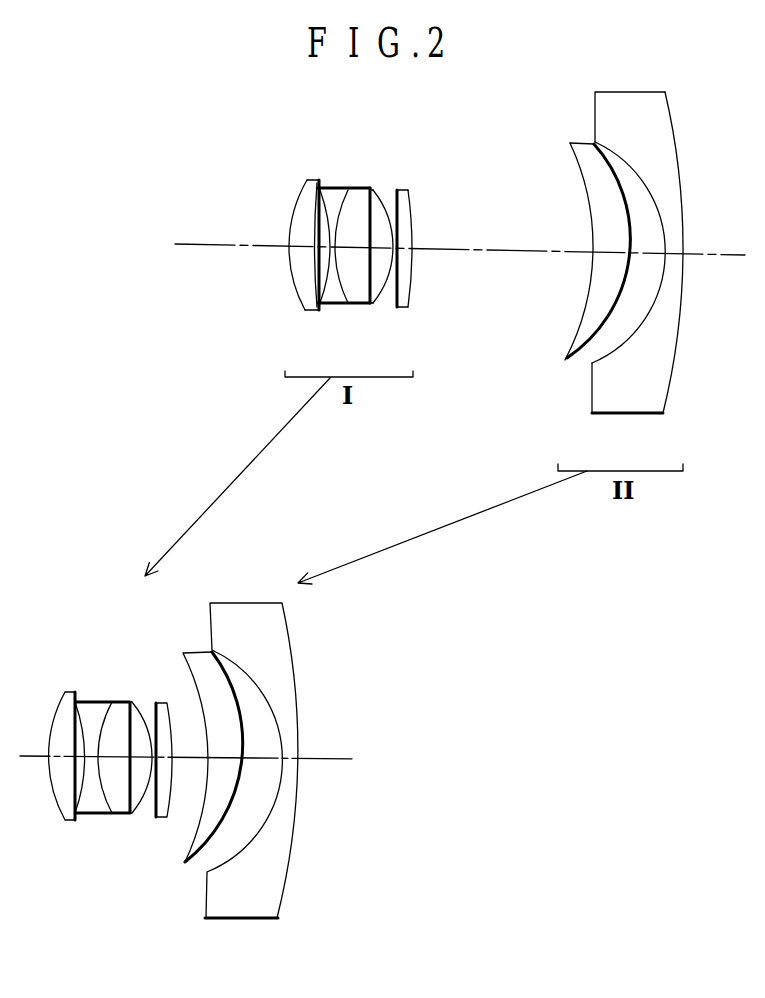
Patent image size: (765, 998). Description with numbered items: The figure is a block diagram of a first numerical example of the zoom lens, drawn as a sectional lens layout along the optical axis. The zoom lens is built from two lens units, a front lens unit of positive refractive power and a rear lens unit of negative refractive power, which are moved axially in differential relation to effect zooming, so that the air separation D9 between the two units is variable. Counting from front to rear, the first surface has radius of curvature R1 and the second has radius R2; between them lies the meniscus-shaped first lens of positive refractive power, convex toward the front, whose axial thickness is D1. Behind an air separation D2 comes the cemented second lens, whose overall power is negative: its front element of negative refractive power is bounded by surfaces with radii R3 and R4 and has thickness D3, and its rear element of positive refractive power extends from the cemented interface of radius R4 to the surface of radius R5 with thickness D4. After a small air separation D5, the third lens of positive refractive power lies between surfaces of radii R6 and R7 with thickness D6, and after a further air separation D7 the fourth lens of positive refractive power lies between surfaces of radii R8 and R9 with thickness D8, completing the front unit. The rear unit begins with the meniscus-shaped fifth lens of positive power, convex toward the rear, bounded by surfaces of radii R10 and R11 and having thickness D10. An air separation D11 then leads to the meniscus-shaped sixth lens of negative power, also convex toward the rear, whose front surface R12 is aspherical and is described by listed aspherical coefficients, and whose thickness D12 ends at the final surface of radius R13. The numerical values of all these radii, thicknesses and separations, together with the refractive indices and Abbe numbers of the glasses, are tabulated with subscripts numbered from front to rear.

The axial thickness D1 is at (296, 252).
The air separation D2 is at (318, 243).
The axial thickness D3 is at (334, 212).
The axial thickness D4 is at (358, 220).
The air separation D5 is at (380, 220).
The axial thickness D6 is at (402, 204).
The air separation D7 is at (394, 224).
The axial thickness D8 is at (407, 236).
The variable air separation D9 is at (495, 245).
The axial thickness D10 is at (606, 248).
The air separation D11 is at (640, 248).
The axial thickness D12 is at (675, 250).
The radius of curvature R1 is at (294, 288).
The radius of curvature R2 is at (306, 310).
The radius of curvature R3 is at (322, 290).
The radius of curvature R4 is at (337, 307).
The radius of curvature R5 is at (353, 303).
The radius of curvature R6 is at (370, 307).
The radius of curvature R7 is at (380, 303).
The radius of curvature R8 is at (394, 309).
The radius of curvature R9 is at (412, 292).
The radius of curvature R10 is at (566, 362).
The radius of curvature R11 is at (597, 363).
The aspherical surface R12 is at (620, 350).
The radius of curvature R13 is at (668, 378).